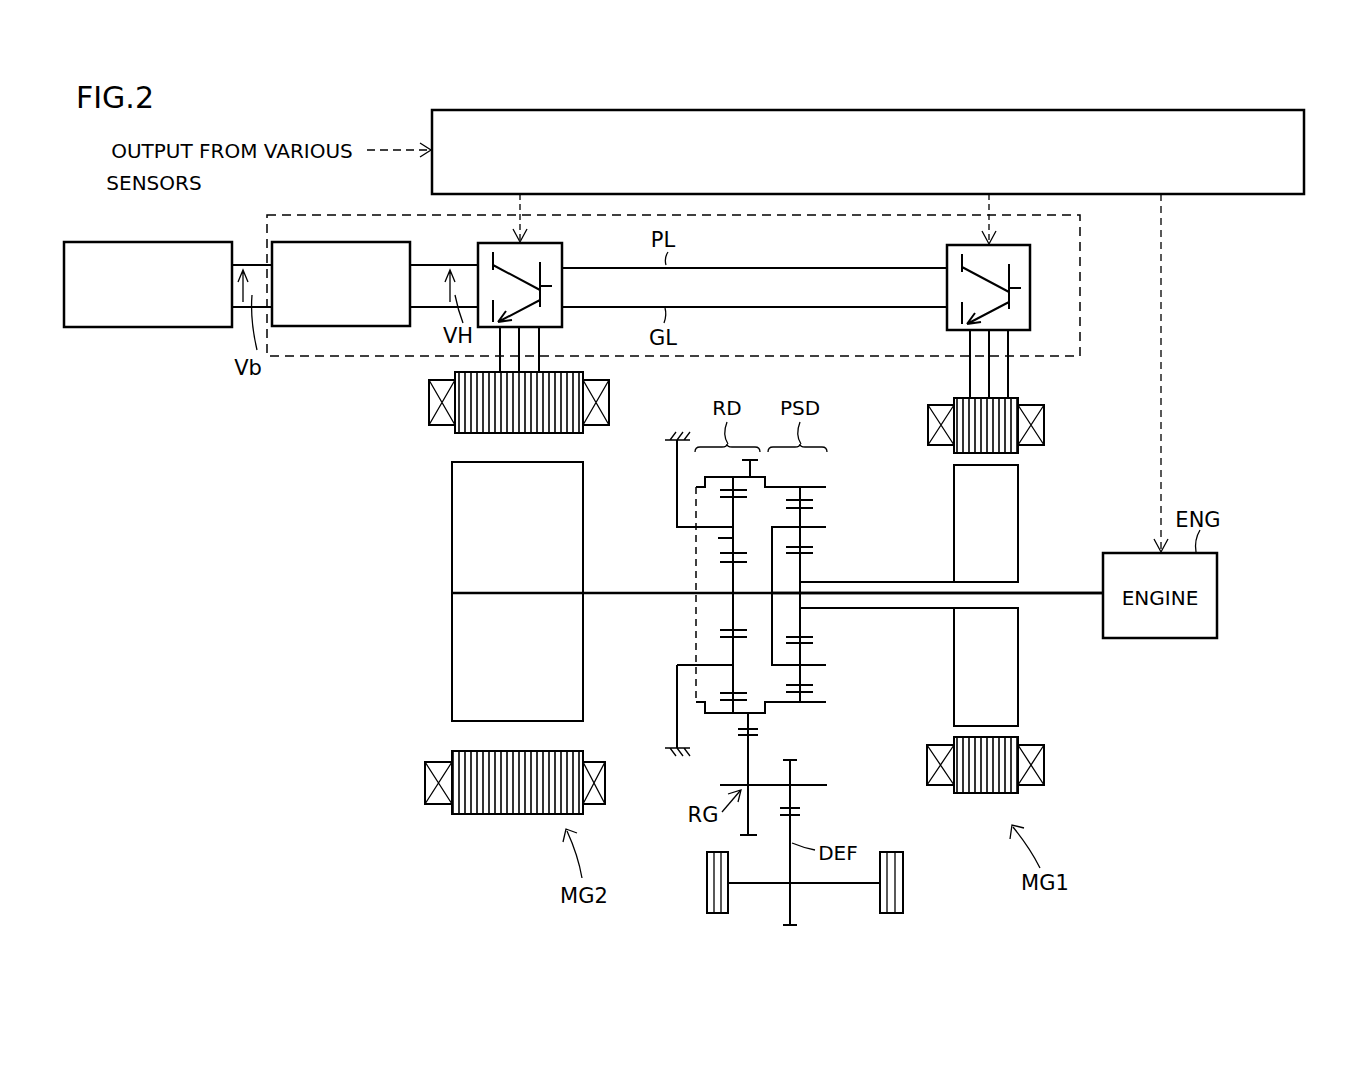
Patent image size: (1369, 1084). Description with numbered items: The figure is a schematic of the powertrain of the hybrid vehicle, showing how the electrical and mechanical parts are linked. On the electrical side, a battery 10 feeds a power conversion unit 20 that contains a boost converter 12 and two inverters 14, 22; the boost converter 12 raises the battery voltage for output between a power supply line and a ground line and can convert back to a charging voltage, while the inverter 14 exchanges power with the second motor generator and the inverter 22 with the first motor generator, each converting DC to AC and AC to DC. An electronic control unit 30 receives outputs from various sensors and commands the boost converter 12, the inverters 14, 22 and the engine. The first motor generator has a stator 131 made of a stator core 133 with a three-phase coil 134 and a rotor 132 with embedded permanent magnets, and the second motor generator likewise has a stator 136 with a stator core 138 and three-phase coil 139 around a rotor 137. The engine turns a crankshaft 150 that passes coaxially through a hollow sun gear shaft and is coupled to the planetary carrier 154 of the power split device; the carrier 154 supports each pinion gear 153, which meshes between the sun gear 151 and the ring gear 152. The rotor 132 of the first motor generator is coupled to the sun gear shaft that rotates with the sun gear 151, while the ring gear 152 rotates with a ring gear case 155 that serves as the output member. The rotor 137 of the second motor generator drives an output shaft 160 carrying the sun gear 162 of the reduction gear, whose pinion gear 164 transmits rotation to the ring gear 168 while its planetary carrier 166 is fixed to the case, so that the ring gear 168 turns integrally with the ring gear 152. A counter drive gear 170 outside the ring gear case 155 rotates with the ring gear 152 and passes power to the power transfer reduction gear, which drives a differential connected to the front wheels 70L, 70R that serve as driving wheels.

The battery 10 is at (148, 327).
The boost converter 12 is at (341, 326).
The inverter 14 is at (545, 243).
The power conversion unit 20 is at (1080, 238).
The inverter 22 is at (1014, 245).
The electronic control unit 30 is at (1287, 196).
The front wheel 70L is at (716, 913).
The front wheel 70R is at (893, 913).
The stator 131 is at (1024, 624).
The rotor 132 is at (1018, 527).
The stator core 133 is at (988, 794).
The three-phase coil 134 is at (942, 786).
The stator 136 is at (523, 620).
The rotor 137 is at (452, 505).
The stator core 138 is at (518, 814).
The three-phase coil 139 is at (440, 805).
The crankshaft 150 is at (1063, 598).
The sun gear 151 is at (810, 582).
The ring gear 152 is at (810, 491).
The pinion gear 153 is at (805, 520).
The planetary carrier 154 is at (790, 546).
The ring gear case 155 is at (785, 487).
The output shaft 160 is at (612, 597).
The sun gear 162 is at (733, 578).
The pinion gear 164 is at (718, 538).
The planetary carrier 166 is at (677, 512).
The ring gear 168 is at (733, 482).
The counter drive gear 170 is at (755, 718).